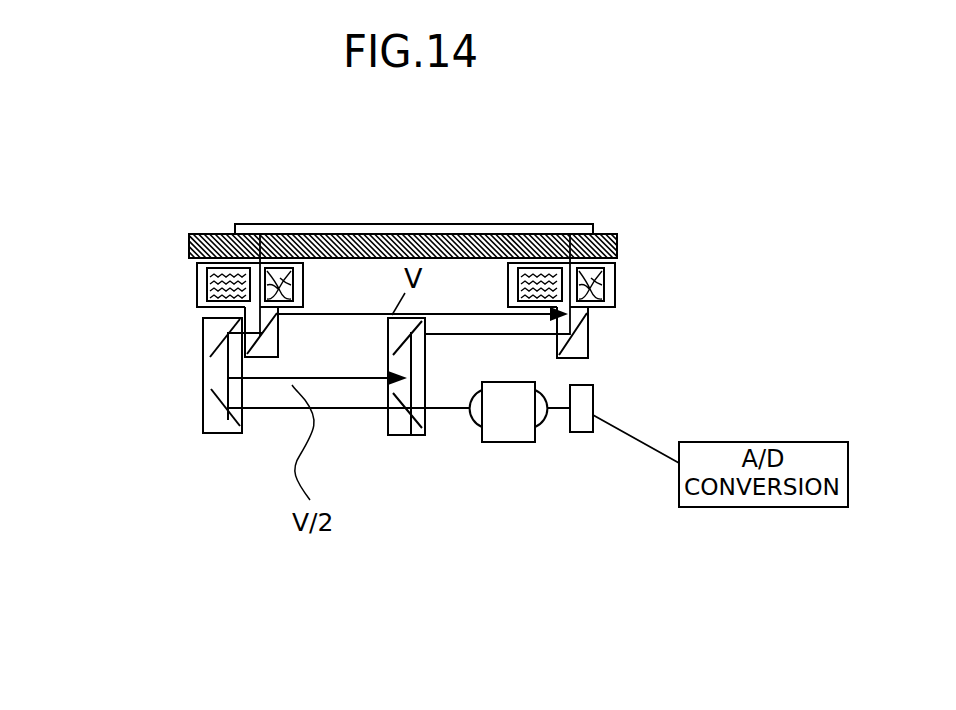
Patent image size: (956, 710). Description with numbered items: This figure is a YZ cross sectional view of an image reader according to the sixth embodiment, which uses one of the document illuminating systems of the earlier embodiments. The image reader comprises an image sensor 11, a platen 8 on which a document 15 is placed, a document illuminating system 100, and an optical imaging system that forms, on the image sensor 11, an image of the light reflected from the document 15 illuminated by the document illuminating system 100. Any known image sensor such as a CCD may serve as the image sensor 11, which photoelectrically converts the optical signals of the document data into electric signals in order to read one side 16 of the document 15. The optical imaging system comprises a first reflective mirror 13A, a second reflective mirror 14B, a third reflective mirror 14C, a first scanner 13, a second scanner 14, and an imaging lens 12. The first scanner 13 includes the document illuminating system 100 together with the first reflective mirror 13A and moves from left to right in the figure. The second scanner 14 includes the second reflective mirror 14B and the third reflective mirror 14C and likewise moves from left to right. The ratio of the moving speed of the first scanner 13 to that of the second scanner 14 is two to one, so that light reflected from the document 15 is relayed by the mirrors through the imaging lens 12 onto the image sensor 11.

The platen 8 is at (618, 240).
The document 15 is at (353, 224).
The one side of the document 16 is at (193, 234).
The document illuminating system 100 is at (180, 280).
The first scanner 13 is at (197, 306).
The first reflective mirror 13A is at (276, 352).
The second scanner 14 is at (169, 417).
The second reflective mirror 14B is at (207, 341).
The third reflective mirror 14C is at (217, 395).
The imaging lens 12 is at (507, 443).
The image sensor 11 is at (587, 432).